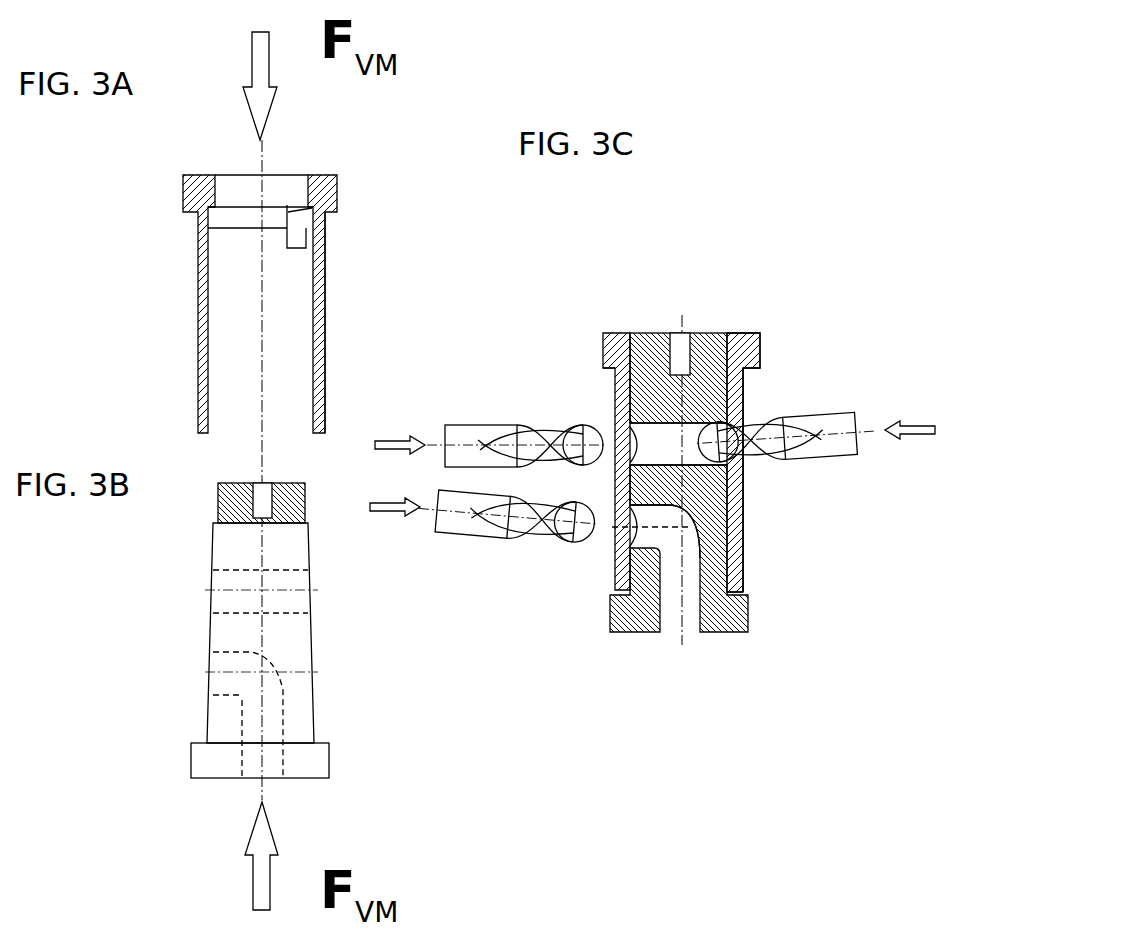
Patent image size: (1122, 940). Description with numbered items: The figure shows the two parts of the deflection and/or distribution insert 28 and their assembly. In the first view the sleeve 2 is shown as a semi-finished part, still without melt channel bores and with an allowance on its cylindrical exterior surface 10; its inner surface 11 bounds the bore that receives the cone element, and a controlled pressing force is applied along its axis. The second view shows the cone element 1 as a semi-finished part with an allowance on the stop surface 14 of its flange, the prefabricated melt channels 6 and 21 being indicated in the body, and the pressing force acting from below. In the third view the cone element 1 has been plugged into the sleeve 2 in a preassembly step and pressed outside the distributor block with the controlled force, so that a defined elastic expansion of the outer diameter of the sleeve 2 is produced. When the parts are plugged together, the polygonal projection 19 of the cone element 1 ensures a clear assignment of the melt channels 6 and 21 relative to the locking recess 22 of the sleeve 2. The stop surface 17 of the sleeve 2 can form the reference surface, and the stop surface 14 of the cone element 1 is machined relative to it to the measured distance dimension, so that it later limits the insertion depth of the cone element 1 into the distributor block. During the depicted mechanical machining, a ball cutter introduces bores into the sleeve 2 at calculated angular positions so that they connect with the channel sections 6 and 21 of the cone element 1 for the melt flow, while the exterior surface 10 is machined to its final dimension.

In FIG. 3B, the cone element 1 is at (222, 648).
In FIG. 3C, the cone element 1 is at (752, 620).
In FIG. 3A, the sleeve 2 is at (198, 290).
In FIG. 3C, the sleeve 2 is at (743, 513).
In FIG. 3C, the melt channel 6 is at (630, 538).
In FIG. 3A, the exterior surface 10 is at (326, 290).
In FIG. 3C, the exterior surface 10 is at (752, 481).
In FIG. 3A, the inner surface 11 is at (290, 205).
In FIG. 3C, the stop surface 14 is at (754, 584).
In FIG. 3C, the stop surface 17 is at (604, 376).
In FIG. 3C, the polygon 19 is at (635, 347).
In FIG. 3C, the melt channel 21 is at (743, 400).
In FIG. 3C, the recess 22 is at (760, 340).
In FIG. 3C, the deflection and/or distribution insert 28 is at (713, 280).